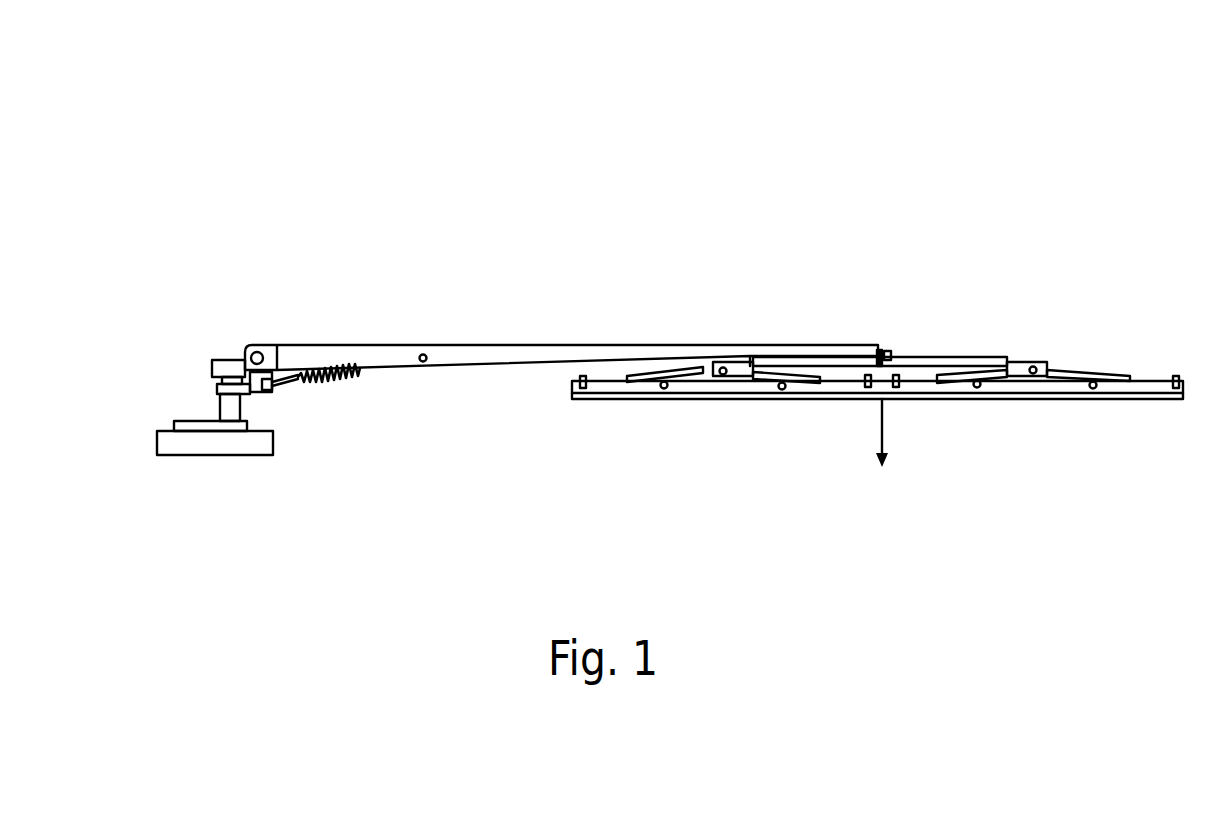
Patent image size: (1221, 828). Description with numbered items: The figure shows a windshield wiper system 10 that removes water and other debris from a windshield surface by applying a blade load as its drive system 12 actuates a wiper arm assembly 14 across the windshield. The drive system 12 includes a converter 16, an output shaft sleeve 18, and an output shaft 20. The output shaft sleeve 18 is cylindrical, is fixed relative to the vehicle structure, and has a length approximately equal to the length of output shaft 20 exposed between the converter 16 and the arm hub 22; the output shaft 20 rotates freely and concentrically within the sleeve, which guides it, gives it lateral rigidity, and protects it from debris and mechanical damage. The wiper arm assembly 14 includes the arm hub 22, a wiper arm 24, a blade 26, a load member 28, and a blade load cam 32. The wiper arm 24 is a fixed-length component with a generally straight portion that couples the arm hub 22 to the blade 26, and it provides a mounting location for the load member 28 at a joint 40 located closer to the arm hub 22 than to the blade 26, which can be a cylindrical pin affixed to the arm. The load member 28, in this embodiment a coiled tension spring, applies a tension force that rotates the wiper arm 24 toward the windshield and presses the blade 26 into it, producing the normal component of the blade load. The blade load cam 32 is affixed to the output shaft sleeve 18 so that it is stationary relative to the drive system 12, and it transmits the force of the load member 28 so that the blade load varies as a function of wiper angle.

The windshield wiper system 10 is at (829, 163).
The drive system 12 is at (192, 522).
The wiper arm assembly 14 is at (527, 221).
The converter 16 is at (157, 443).
The output shaft sleeve 18 is at (217, 413).
The output shaft 20 is at (217, 377).
The arm hub 22 is at (233, 346).
The wiper arm 24 is at (416, 338).
The blade 26 is at (1066, 368).
The load member 28 is at (352, 373).
The blade load cam 32 is at (207, 392).
The joint 40 is at (437, 369).